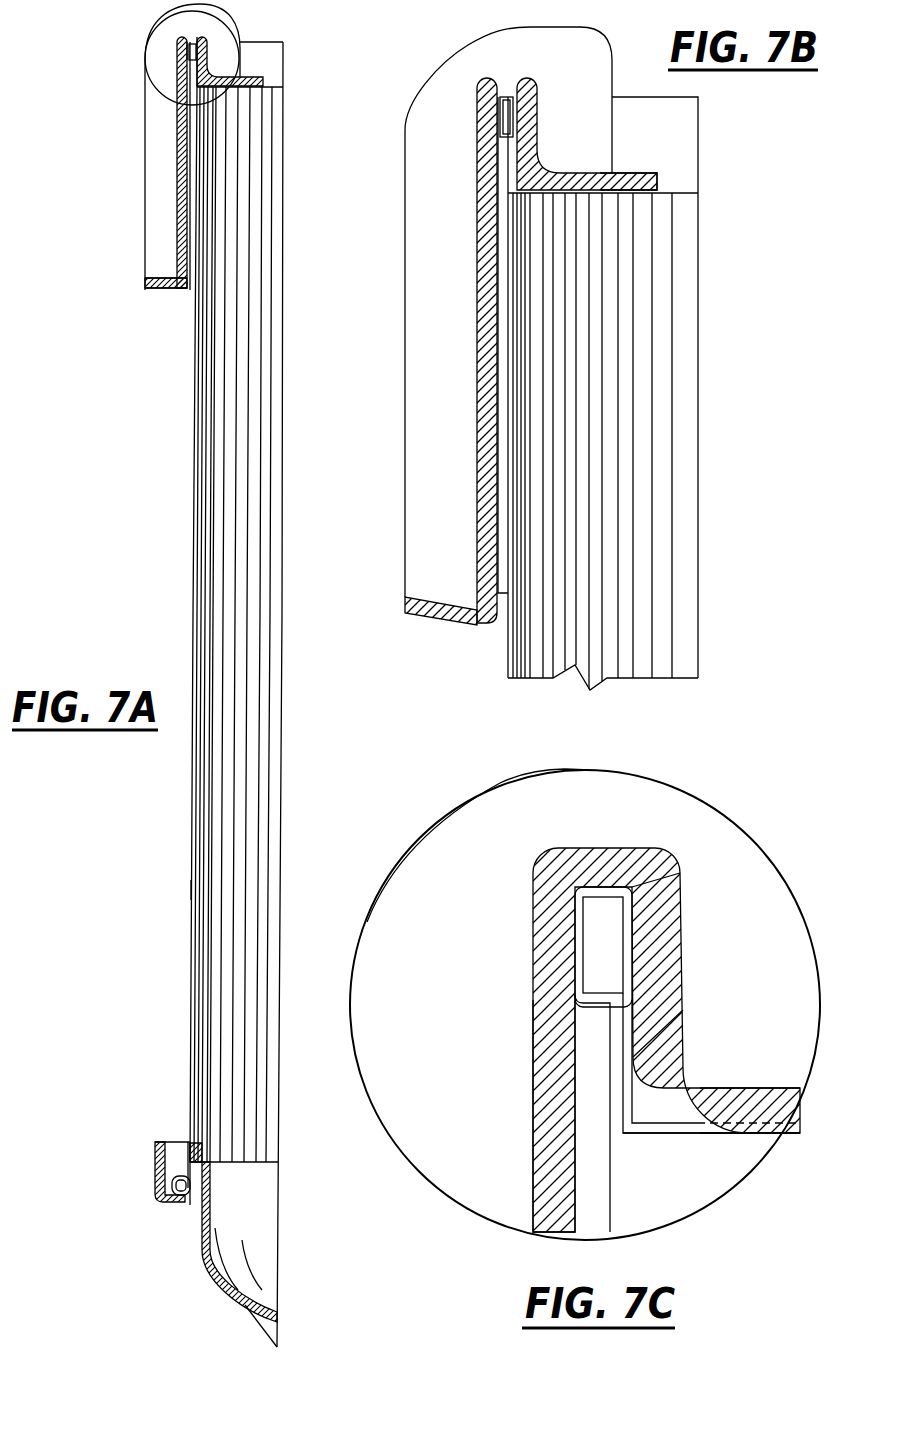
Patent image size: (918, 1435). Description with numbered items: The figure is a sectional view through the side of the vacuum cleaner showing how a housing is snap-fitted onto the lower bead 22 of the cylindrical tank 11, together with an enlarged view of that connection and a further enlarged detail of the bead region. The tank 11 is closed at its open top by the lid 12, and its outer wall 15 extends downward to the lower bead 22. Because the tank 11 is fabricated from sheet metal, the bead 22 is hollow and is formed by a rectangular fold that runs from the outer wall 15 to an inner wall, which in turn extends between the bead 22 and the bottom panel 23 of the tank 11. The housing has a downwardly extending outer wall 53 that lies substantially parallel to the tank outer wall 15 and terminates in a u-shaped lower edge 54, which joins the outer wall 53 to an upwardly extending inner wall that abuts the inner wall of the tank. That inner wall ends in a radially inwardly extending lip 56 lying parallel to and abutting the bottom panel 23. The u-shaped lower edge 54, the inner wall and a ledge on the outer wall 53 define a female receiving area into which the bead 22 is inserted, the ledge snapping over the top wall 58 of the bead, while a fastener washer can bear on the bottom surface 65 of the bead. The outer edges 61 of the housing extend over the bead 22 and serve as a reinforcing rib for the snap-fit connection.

In FIG. 7A, the cylindrical tank 11 is at (186, 893).
In FIG. 7A, the lid 12 is at (205, 1285).
In FIG. 7A, the outer wall 15 is at (200, 183).
In FIG. 7B, the outer wall 15 is at (517, 425).
In FIG. 7C, the lower bead 22 is at (622, 880).
In FIG. 7A, the bottom panel 23 is at (268, 92).
In FIG. 7B, the bottom panel 23 is at (665, 195).
In FIG. 7C, the bottom panel 23 is at (705, 1138).
In FIG. 7A, the outer wall 53 is at (182, 162).
In FIG. 7B, the outer wall 53 is at (480, 207).
In FIG. 7C, the outer wall 53 is at (552, 1137).
In FIG. 7B, the u-shaped lower edge 54 is at (497, 78).
In FIG. 7C, the u-shaped lower edge 54 is at (570, 868).
In FIG. 7B, the lip 56 is at (628, 178).
In FIG. 7C, the lip 56 is at (772, 1100).
In FIG. 7C, the top wall 58 is at (595, 1000).
In FIG. 7A, the outer edges 61 is at (230, 14).
In FIG. 7B, the outer edges 61 is at (545, 47).
In FIG. 7C, the outer edges 61 is at (478, 845).
In FIG. 7C, the bottom surface 65 is at (606, 885).